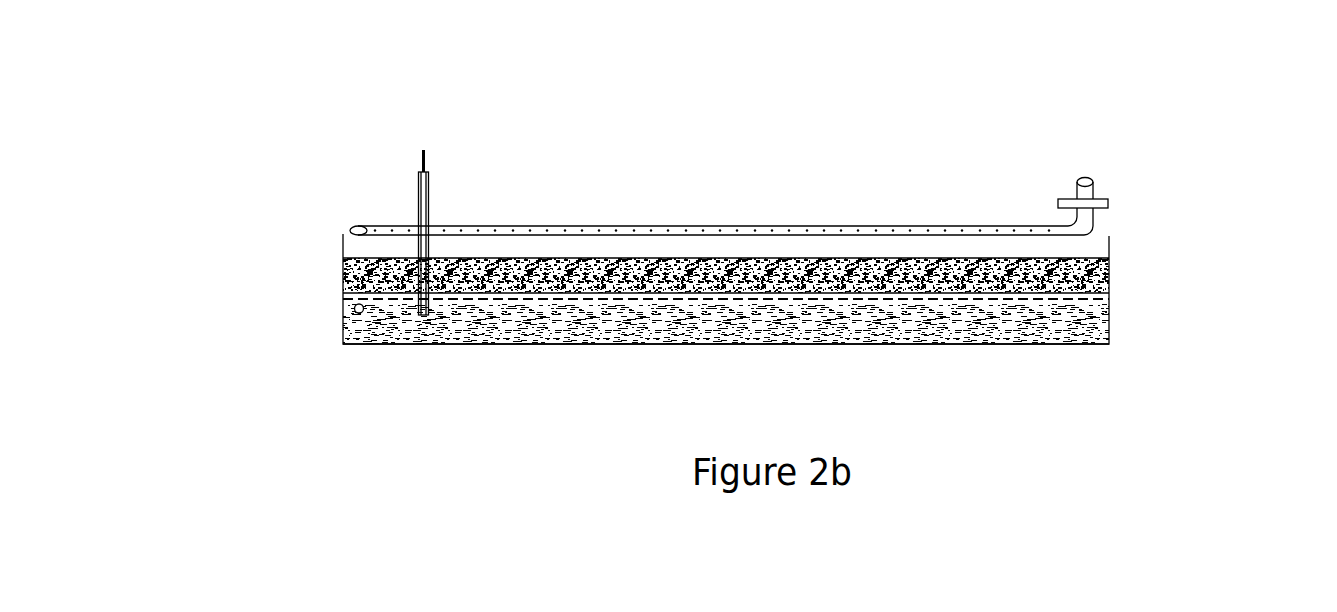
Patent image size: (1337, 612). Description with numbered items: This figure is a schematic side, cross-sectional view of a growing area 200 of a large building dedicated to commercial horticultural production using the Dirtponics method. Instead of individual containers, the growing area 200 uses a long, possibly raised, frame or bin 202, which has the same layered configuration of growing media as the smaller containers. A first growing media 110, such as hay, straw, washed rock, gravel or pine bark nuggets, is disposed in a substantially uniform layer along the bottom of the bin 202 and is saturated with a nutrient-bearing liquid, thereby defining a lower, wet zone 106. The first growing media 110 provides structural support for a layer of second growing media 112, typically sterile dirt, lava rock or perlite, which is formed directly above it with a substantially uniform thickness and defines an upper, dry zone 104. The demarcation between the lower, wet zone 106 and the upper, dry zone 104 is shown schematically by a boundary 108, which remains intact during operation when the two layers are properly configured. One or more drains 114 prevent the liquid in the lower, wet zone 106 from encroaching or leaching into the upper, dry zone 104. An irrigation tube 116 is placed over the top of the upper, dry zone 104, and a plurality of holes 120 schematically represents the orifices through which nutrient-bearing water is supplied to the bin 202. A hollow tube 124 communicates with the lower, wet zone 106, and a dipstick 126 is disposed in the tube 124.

The growing area 200 is at (1022, 136).
The bin 202 is at (343, 250).
The upper, dry zone 104 is at (1110, 273).
The lower, wet zone 106 is at (1110, 331).
The boundary 108 is at (1103, 297).
The first growing media 110 is at (518, 325).
The second growing media 112 is at (923, 286).
The drain 114 is at (355, 305).
The irrigation tube 116 is at (882, 226).
The holes 120 is at (643, 228).
The hollow tube 124 is at (418, 174).
The dipstick 126 is at (422, 152).